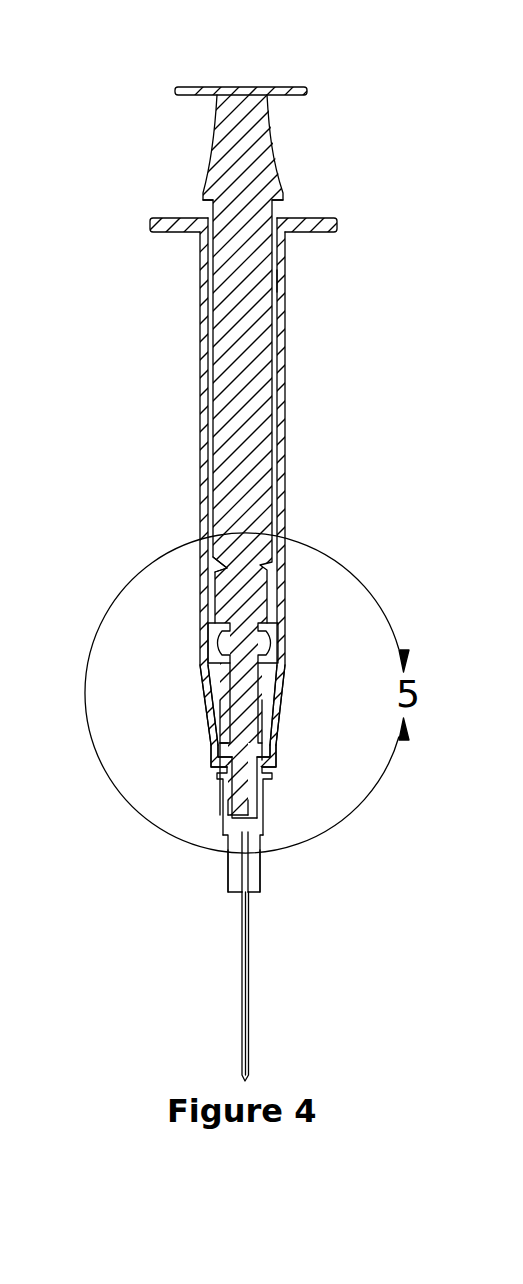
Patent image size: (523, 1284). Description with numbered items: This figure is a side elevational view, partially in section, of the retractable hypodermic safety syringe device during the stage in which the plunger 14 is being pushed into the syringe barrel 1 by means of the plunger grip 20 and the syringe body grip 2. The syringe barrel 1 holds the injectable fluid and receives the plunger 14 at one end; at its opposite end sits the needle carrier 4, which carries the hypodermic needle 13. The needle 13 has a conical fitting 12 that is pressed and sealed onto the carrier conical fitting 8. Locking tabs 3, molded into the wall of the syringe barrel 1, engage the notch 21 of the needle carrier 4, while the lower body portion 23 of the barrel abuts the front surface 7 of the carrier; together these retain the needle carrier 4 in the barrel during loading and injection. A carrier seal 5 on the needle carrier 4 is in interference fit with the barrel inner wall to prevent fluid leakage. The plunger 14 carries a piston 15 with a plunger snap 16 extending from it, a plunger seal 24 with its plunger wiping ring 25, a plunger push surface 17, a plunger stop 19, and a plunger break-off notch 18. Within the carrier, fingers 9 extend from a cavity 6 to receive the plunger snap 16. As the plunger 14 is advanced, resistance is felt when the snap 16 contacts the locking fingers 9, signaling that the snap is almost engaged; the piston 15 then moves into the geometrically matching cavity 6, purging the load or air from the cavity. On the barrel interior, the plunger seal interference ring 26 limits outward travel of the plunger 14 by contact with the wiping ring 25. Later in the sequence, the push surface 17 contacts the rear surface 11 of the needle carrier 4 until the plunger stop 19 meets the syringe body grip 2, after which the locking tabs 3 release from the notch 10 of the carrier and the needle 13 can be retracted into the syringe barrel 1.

The syringe barrel 1 is at (285, 467).
The syringe body grip 2 is at (163, 218).
The locking tabs 3 is at (207, 725).
The needle carrier 4 is at (280, 725).
The carrier seal 5 is at (203, 673).
The cavity 6 is at (225, 797).
The front surface 7 is at (210, 757).
The carrier conical fitting 8 is at (223, 788).
The fingers 9 is at (242, 825).
The notch 10 is at (281, 740).
The rear surface 11 is at (207, 680).
The conical fitting 12 is at (259, 883).
The hypodermic needle 13 is at (250, 998).
The plunger 14 is at (273, 160).
The piston 15 is at (247, 695).
The plunger snap 16 is at (240, 822).
The plunger push surface 17 is at (207, 667).
The plunger break-off notch 18 is at (210, 560).
The plunger stop 19 is at (283, 197).
The plunger grip 20 is at (293, 87).
The notch 21 is at (213, 743).
The lower body portion 23 is at (280, 733).
The plunger seal 24 is at (275, 632).
The plunger wiping ring 25 is at (276, 665).
The plunger seal interference ring 26 is at (276, 281).